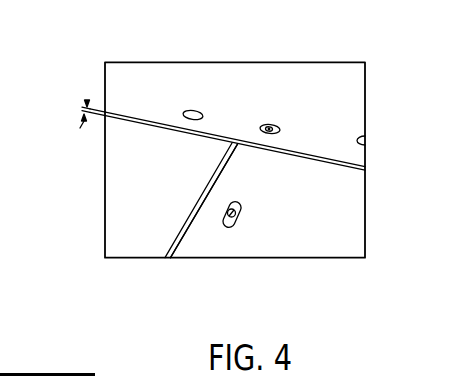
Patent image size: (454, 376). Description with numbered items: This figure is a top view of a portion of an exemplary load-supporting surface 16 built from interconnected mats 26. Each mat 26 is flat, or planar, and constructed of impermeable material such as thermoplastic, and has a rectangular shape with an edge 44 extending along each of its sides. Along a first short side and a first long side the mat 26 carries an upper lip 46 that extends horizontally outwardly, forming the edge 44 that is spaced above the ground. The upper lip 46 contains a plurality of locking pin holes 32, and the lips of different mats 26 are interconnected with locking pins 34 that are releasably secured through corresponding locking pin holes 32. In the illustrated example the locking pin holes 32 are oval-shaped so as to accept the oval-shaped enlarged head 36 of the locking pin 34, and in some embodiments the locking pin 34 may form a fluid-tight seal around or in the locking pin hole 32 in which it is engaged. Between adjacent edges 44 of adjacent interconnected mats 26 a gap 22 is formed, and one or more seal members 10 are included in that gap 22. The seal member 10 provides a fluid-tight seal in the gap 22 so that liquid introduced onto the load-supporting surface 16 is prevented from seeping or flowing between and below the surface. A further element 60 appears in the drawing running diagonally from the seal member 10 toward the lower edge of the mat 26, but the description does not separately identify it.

The seal member 10 is at (365, 170).
The load-supporting surface 16 is at (289, 36).
The gap 22 is at (87, 100).
The mat 26 is at (366, 88).
The locking pin holes 32 is at (191, 110).
The locking pin 34 is at (225, 227).
The enlarged head 36 is at (237, 227).
The edge 44 is at (318, 140).
The upper lip 46 is at (193, 235).
The diagonal bar 60 is at (209, 159).